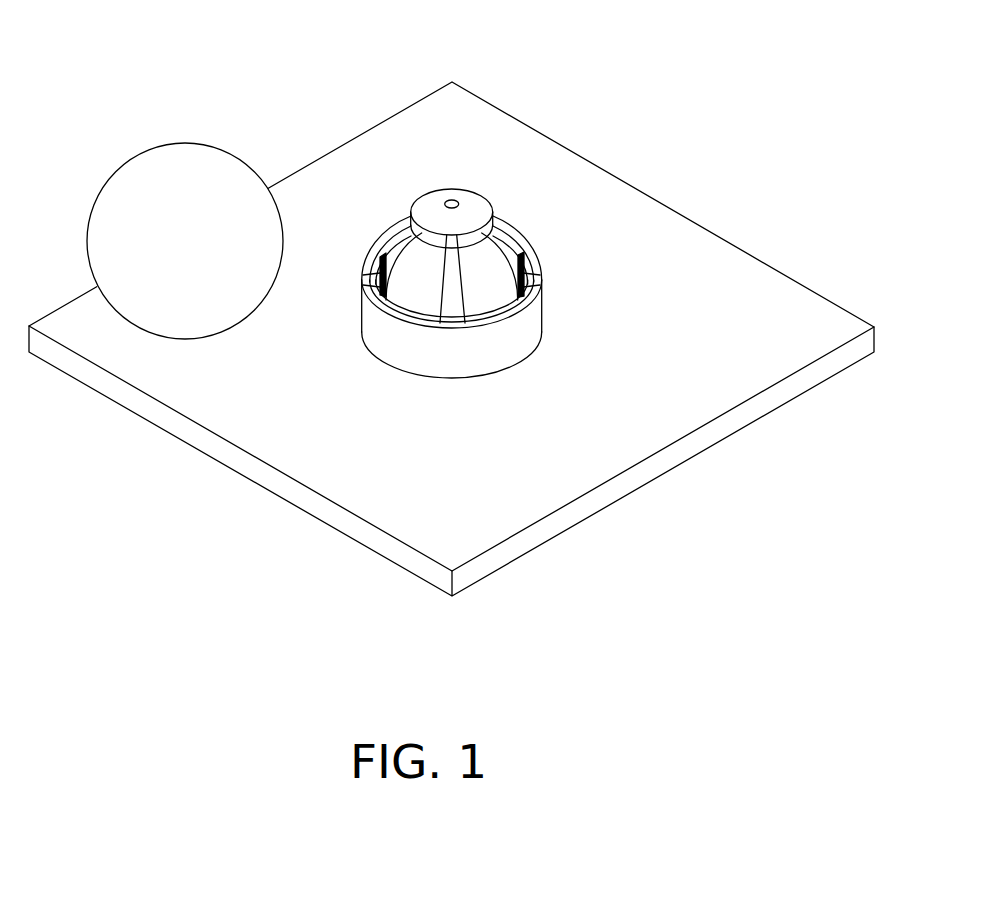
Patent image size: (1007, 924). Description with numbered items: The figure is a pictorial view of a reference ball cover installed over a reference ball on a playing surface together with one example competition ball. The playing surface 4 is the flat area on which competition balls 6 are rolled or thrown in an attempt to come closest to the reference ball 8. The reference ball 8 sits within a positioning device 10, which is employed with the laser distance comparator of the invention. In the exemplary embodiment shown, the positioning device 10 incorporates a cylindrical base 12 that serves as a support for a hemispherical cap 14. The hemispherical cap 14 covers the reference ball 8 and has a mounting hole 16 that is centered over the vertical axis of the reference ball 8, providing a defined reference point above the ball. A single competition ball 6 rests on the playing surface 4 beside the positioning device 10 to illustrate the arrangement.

The playing surface 4 is at (680, 262).
The competition ball 6 is at (166, 183).
The reference ball 8 is at (416, 256).
The positioning device 10 is at (553, 261).
The cylindrical base 12 is at (410, 352).
The hemispherical cap 14 is at (455, 288).
The mounting hole 16 is at (452, 200).